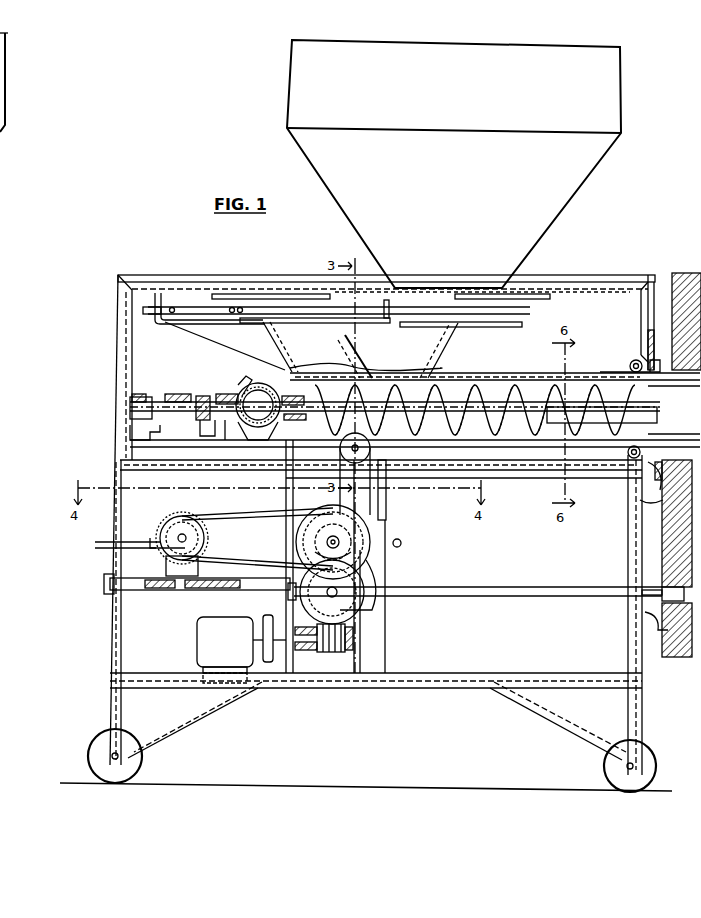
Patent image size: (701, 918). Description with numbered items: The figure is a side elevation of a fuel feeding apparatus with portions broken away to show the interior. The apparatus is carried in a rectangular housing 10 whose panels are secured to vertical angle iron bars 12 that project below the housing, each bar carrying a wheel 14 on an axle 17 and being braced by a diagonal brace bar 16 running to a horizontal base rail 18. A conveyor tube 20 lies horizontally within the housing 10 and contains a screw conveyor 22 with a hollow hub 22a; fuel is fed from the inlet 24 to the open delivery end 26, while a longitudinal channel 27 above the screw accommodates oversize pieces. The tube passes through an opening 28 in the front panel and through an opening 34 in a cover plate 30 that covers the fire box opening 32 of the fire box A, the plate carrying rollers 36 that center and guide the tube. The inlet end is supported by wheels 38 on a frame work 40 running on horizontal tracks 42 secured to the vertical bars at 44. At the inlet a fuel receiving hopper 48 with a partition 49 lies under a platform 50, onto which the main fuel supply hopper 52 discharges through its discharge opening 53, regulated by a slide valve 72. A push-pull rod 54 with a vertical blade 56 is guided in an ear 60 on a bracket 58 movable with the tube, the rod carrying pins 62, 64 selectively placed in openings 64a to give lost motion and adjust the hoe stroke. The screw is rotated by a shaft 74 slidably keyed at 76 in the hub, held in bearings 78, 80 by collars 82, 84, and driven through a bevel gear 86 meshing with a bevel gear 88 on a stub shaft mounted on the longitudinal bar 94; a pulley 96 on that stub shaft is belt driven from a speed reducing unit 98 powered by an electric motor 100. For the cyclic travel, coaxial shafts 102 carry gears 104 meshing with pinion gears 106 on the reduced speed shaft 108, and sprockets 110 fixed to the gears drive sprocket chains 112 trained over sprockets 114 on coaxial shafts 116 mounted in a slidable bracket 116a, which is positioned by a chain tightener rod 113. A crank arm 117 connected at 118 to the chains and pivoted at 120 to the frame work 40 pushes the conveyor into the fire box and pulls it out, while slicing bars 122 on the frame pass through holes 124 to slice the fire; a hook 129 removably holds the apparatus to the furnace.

The housing 10 is at (192, 278).
The vertical angle iron bars 12 is at (121, 606).
The wheel 14 is at (135, 750).
The diagonal brace bar 16 is at (220, 697).
The axle 17 is at (120, 758).
The horizontal base rail 18 is at (482, 678).
The conveyor tube 20 is at (497, 372).
The screw conveyor 22 is at (508, 375).
The hollow hub 22a is at (612, 424).
The inlet 24 is at (404, 390).
The delivery end 26 is at (698, 416).
The longitudinal channel 27 is at (468, 372).
The opening 28 is at (648, 482).
The cover plate 30 is at (660, 345).
The fire box opening 32 is at (644, 504).
The opening 34 is at (630, 370).
The rollers 36 is at (631, 361).
The wheels 38 is at (372, 448).
The frame work 40 is at (400, 480).
The horizontal tracks 42 is at (526, 480).
The track securing point 44 is at (124, 462).
The fuel receiving hopper 48 is at (445, 336).
The partition 49 is at (360, 366).
The platform 50 is at (506, 322).
The main fuel supply hopper 52 is at (588, 176).
The discharge opening 53 is at (456, 290).
The push-pull rod 54 is at (308, 310).
The vertical blade 56 is at (392, 312).
The bracket 58 is at (205, 332).
The ear 60 is at (158, 292).
The pin 62 is at (155, 316).
The pin 64 is at (232, 308).
The openings 64a is at (176, 309).
The slide valve 72 is at (334, 290).
The shaft 74 is at (186, 420).
The sliding key 76 is at (300, 396).
The bearing 78 is at (136, 394).
The bearing 80 is at (206, 396).
The collar 82 is at (146, 396).
The collar 84 is at (190, 385).
The bevel gear 86 is at (232, 392).
The bevel gear 88 is at (258, 422).
The longitudinal bar 94 is at (168, 424).
The pulley 96 is at (270, 384).
The speed reducing unit 98 is at (340, 652).
The electric motor 100 is at (232, 618).
The coaxial shafts 102 is at (340, 540).
The gear 104 is at (370, 548).
The pinion gear 106 is at (327, 594).
The reduced speed shaft 108 is at (362, 600).
The sprockets 110 is at (355, 524).
The sprocket chains 112 is at (232, 516).
The chain tightener rod 113 is at (168, 589).
The sprockets 114 is at (186, 516).
The coaxial shafts 116 is at (170, 520).
The bracket 116a is at (112, 545).
The crank arm 117 is at (240, 534).
The chain connection 118 is at (156, 546).
The pivot connection 120 is at (402, 542).
The slicing bars 122 is at (514, 590).
The holes 124 is at (665, 590).
The hook 129 is at (648, 614).
The fire box A is at (700, 518).